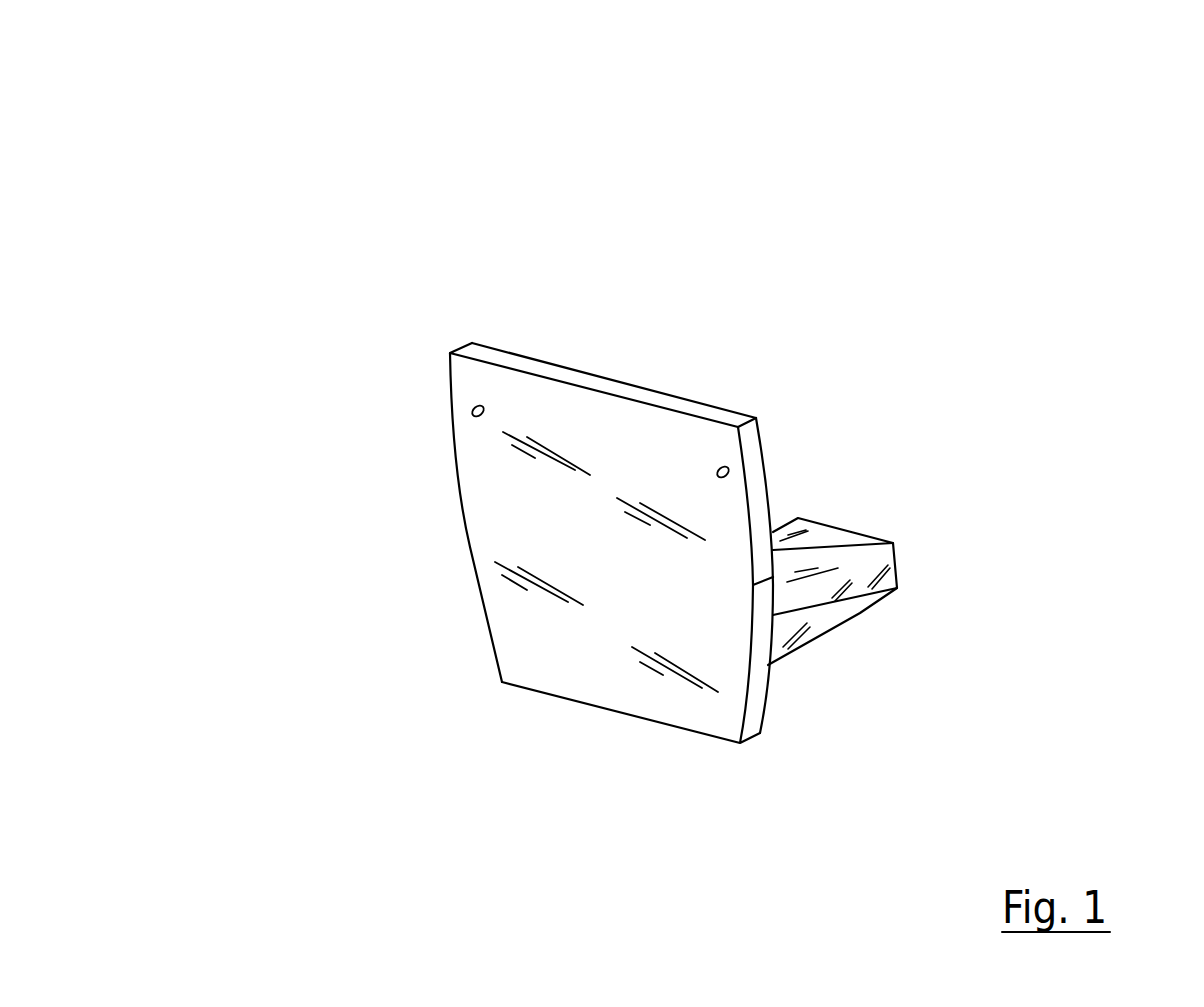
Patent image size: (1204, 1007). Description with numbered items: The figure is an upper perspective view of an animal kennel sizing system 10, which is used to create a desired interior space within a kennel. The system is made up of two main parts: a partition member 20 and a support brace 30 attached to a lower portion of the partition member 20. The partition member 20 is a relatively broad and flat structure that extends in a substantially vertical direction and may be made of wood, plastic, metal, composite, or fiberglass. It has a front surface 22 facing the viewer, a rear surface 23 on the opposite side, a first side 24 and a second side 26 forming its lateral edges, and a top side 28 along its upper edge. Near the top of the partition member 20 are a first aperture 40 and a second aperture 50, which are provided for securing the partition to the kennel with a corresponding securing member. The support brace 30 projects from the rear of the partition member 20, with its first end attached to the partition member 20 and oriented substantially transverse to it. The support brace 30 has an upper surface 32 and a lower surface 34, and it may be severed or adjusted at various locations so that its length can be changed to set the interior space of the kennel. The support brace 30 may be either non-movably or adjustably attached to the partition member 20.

The animal kennel sizing system 10 is at (997, 192).
The partition member 20 is at (650, 388).
The front surface 22 is at (570, 658).
The rear surface 23 is at (720, 407).
The first side 24 is at (760, 685).
The second side 26 is at (475, 568).
The top side 28 is at (527, 365).
The support brace 30 is at (867, 533).
The upper surface 32 is at (873, 545).
The lower surface 34 is at (860, 610).
The first aperture 40 is at (478, 410).
The second aperture 50 is at (727, 468).